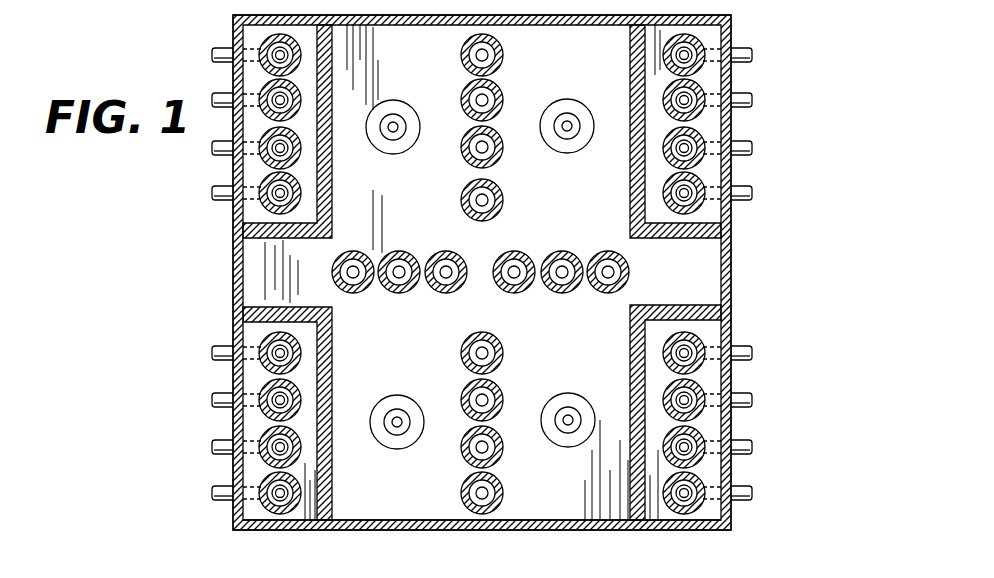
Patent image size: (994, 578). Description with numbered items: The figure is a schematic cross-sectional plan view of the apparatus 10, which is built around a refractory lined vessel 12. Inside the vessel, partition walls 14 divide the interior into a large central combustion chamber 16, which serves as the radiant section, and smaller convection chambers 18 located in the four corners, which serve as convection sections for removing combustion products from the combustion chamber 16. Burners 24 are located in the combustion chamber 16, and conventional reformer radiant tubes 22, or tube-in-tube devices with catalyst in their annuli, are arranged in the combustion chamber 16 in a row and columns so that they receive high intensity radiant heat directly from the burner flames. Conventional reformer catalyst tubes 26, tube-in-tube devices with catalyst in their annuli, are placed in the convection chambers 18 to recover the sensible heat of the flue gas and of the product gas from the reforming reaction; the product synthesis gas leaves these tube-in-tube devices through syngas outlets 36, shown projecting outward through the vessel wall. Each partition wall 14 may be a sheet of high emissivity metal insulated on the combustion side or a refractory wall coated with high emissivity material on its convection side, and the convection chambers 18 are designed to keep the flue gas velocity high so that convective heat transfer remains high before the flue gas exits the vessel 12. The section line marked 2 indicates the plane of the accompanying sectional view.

The apparatus 10 is at (138, 410).
The refractory lined vessel 12 is at (732, 247).
The partition walls 14 is at (337, 497).
The combustion chamber 16 is at (602, 523).
The convection chambers 18 is at (242, 222).
The reformer radiant tubes 22 is at (502, 52).
The burners 24 is at (396, 154).
The reformer catalyst tubes 26 is at (265, 44).
The syngas outlets 36 is at (212, 100).
The section line 2- 2 is at (187, 198).